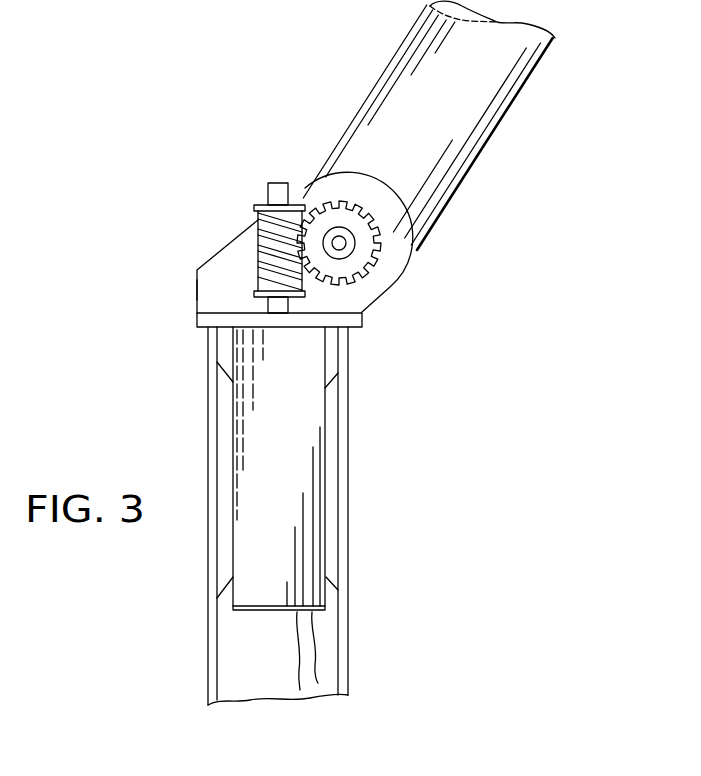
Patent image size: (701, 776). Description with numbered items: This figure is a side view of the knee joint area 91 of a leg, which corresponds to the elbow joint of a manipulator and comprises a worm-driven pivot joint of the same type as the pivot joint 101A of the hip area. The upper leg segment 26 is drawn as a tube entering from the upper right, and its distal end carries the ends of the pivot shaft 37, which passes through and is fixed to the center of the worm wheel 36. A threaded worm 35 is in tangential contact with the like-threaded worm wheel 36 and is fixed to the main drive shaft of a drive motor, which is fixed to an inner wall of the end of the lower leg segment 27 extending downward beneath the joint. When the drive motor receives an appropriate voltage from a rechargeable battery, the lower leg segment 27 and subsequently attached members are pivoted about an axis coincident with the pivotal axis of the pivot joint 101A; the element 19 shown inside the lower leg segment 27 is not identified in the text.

The upper leg segment 26 is at (372, 98).
The threaded worm 35 is at (257, 223).
The worm wheel 36 is at (373, 268).
The pivot shaft 37 is at (350, 238).
The knee joint area 91 is at (160, 308).
The pivot joint 101A is at (183, 247).
The inner rod 19 is at (307, 510).
The lower leg segment 27 is at (348, 662).